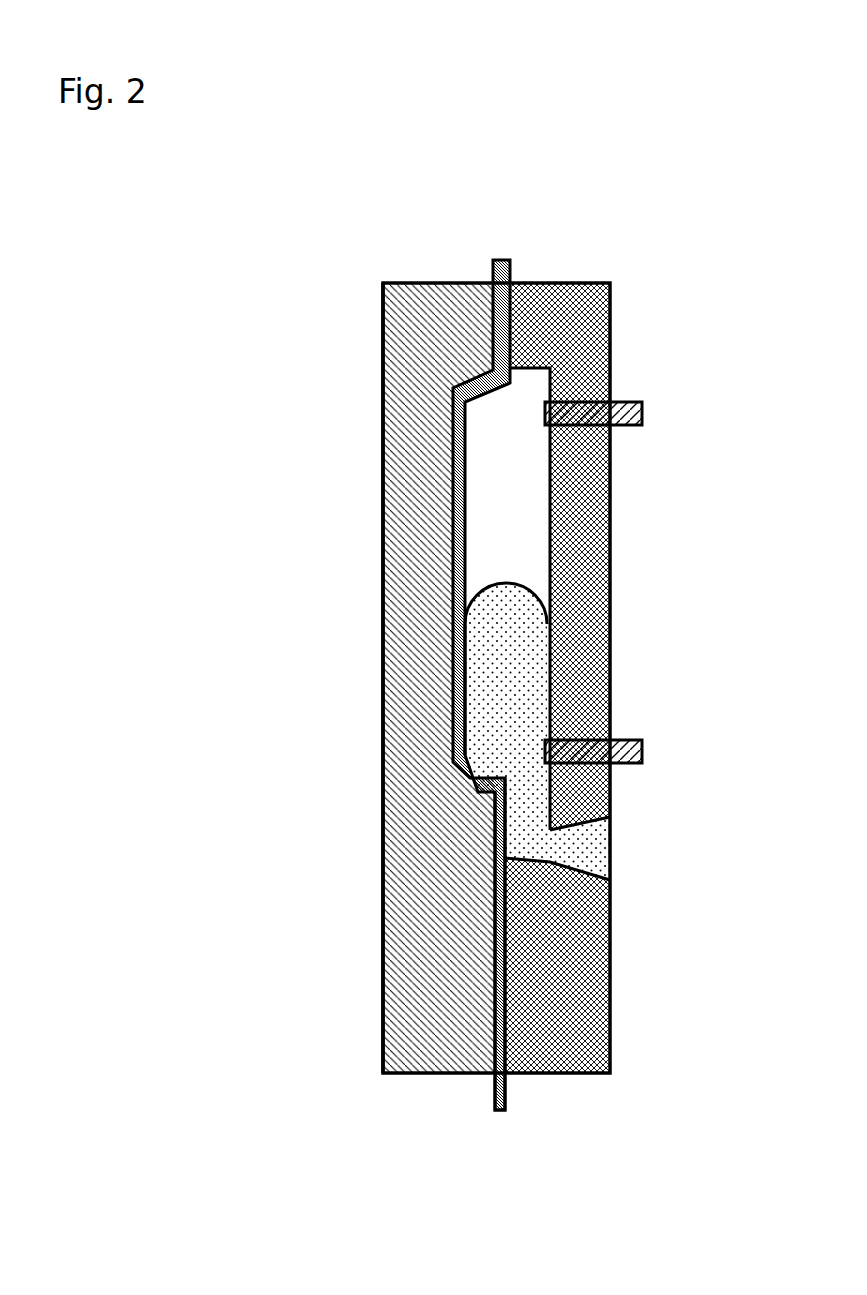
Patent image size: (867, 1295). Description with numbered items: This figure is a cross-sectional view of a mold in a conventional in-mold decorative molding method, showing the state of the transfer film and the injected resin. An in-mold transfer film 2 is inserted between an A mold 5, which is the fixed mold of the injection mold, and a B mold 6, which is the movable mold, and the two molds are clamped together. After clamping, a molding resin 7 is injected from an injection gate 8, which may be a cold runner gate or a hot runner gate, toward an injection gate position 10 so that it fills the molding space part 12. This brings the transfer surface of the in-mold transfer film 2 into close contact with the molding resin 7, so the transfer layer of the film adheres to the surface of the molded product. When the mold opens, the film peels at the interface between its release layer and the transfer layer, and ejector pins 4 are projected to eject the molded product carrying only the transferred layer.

The in-mold transfer film 2 is at (510, 258).
The ejector pins 4 is at (630, 738).
The A mold 5 is at (564, 324).
The B mold 6 is at (419, 336).
The molding resin 7 is at (498, 693).
The injection gate 8 is at (594, 848).
The injection gate position 10 is at (497, 846).
The molding space part 12 is at (518, 536).